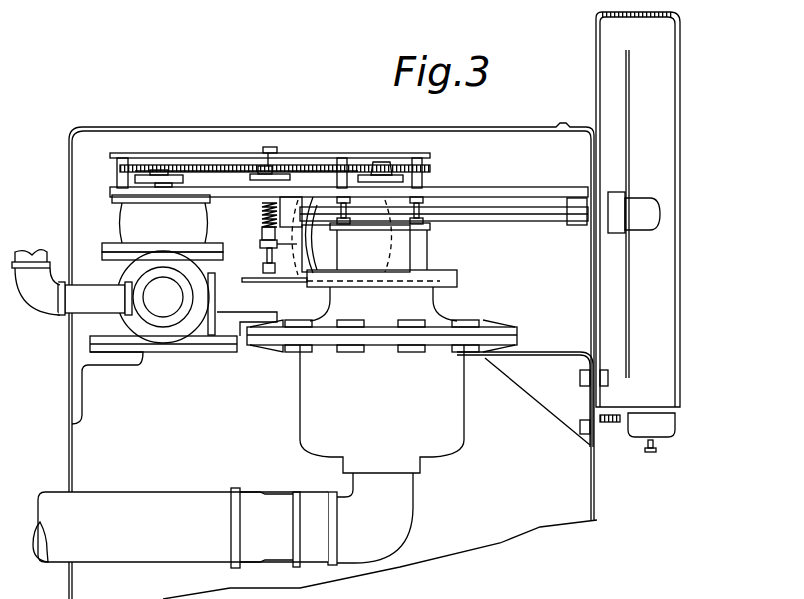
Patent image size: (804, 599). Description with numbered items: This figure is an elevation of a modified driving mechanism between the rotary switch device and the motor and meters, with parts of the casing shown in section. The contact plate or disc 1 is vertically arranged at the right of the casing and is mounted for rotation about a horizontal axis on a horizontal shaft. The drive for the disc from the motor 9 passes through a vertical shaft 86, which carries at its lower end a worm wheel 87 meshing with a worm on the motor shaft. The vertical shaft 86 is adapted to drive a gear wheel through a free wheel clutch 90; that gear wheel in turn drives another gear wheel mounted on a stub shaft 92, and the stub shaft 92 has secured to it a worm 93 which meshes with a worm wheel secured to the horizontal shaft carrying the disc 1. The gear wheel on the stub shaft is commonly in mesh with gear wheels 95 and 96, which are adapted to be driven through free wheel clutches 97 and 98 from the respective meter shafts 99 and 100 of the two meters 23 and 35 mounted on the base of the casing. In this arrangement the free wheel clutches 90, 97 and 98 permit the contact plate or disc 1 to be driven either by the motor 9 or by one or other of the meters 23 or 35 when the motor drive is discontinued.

The contact plate or disc 1 is at (632, 290).
The motor 9 is at (345, 236).
The meter 23 is at (382, 409).
The meter 35 is at (122, 222).
The vertical shaft 86 is at (272, 271).
The worm wheel 87 is at (262, 246).
The free wheel clutch 90 is at (292, 160).
The stub shaft 92 is at (260, 200).
The worm 93 is at (262, 229).
The gear wheel 95 is at (407, 162).
The gear wheel 96 is at (163, 172).
The free wheel clutch 97 is at (413, 180).
The free wheel clutch 98 is at (135, 180).
The meter shaft 99 is at (427, 228).
The meter shaft 100 is at (162, 187).